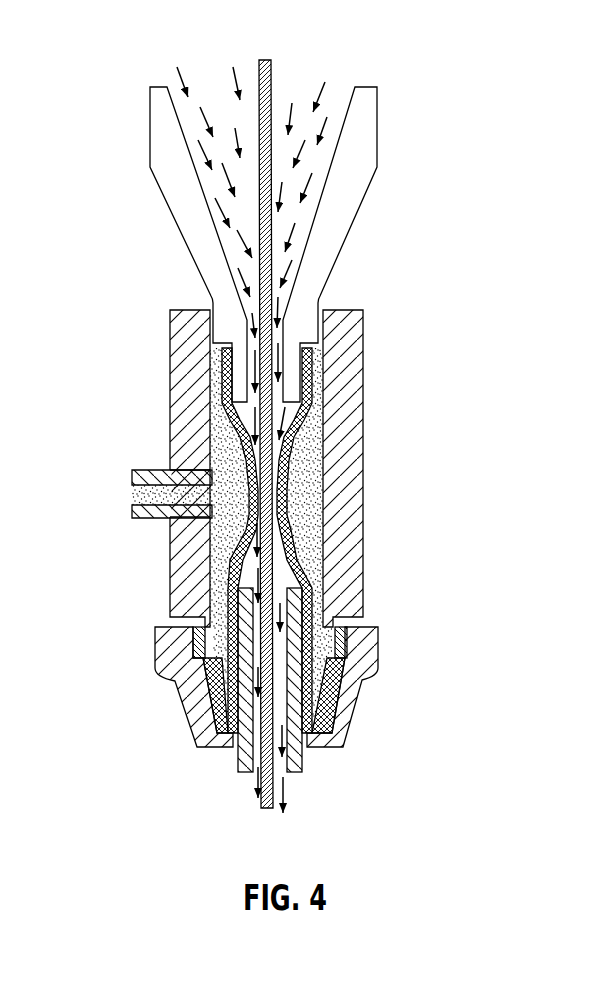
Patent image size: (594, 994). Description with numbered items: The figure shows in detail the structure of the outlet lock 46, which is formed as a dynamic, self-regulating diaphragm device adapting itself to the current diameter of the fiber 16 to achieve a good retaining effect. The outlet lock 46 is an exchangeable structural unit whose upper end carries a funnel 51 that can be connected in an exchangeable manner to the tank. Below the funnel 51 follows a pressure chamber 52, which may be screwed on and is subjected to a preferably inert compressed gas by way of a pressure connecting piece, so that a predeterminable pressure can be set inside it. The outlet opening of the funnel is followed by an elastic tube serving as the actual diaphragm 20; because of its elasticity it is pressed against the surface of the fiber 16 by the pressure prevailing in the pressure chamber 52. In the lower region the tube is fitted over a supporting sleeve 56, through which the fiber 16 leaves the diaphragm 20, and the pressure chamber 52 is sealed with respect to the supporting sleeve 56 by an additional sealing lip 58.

The fiber 16 is at (264, 133).
The diaphragm 20 is at (296, 489).
The outlet lock 46 is at (486, 289).
The funnel 51 is at (172, 177).
The pressure chamber 52 is at (358, 502).
The supporting sleeve 56 is at (293, 716).
The sealing lip 58 is at (222, 725).